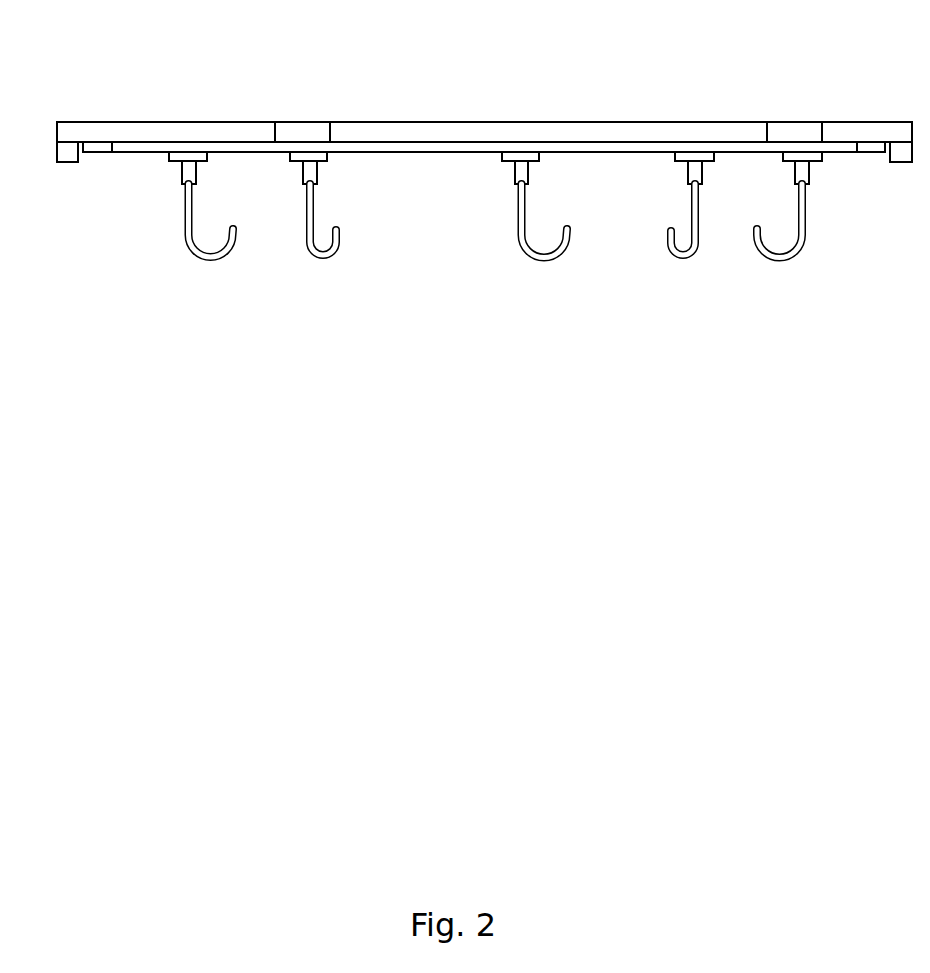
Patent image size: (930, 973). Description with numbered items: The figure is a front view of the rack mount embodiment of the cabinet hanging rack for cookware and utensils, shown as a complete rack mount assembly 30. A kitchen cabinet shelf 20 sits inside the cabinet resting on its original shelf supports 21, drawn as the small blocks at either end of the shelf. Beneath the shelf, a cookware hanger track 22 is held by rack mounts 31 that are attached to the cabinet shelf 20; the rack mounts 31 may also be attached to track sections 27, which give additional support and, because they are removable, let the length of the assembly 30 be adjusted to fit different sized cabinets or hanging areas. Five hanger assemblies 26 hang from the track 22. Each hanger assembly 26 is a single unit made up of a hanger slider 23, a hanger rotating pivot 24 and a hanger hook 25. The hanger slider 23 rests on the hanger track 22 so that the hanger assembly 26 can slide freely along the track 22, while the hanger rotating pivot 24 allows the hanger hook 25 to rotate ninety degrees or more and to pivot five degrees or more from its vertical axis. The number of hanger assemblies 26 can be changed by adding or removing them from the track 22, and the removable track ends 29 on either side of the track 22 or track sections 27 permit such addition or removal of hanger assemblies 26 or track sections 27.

The kitchen cabinet shelf 20 is at (472, 135).
The shelf supports 21 is at (67, 152).
The cookware hanger track 22 is at (643, 148).
The hanger slider 23 is at (327, 157).
The hanger rotating pivot 24 is at (518, 172).
The hanger hook 25 is at (548, 253).
The hanger assembly 26 is at (187, 186).
The track section 27 is at (217, 149).
The track ends 29 is at (873, 148).
The rack mount assembly 30 is at (682, 313).
The rack mounts 31 is at (305, 132).